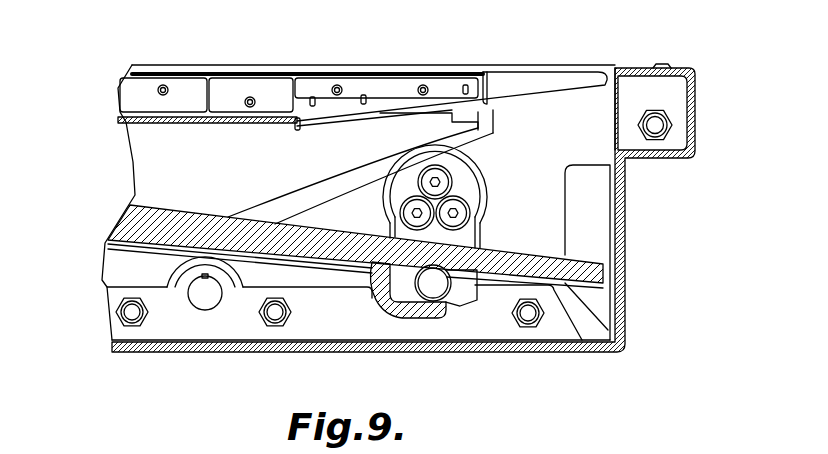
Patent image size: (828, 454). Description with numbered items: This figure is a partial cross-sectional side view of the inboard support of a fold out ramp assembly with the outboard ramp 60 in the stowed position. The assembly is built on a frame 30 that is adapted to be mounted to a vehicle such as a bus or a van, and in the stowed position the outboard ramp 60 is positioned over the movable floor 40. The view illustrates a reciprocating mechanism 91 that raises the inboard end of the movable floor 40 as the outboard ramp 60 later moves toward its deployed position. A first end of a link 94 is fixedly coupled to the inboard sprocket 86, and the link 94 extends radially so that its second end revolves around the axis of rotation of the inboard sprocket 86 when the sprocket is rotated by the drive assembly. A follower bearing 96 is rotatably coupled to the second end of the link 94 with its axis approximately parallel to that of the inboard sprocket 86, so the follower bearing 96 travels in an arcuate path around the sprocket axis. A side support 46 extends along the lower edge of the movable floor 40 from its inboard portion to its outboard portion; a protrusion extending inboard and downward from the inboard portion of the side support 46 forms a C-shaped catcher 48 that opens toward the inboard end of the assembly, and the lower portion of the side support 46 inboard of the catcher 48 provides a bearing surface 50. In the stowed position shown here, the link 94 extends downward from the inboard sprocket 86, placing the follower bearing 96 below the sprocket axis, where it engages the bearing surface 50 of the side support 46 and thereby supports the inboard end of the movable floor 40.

The frame 30 is at (625, 208).
The movable floor 40 is at (585, 258).
The side support 46 is at (137, 220).
The C-shaped catcher 48 is at (373, 300).
The bearing surface 50 is at (555, 292).
The outboard ramp 60 is at (195, 88).
The inboard sprocket 86 is at (462, 168).
The reciprocating mechanism 91 is at (547, 160).
The link 94 is at (437, 284).
The follower bearing 96 is at (440, 318).